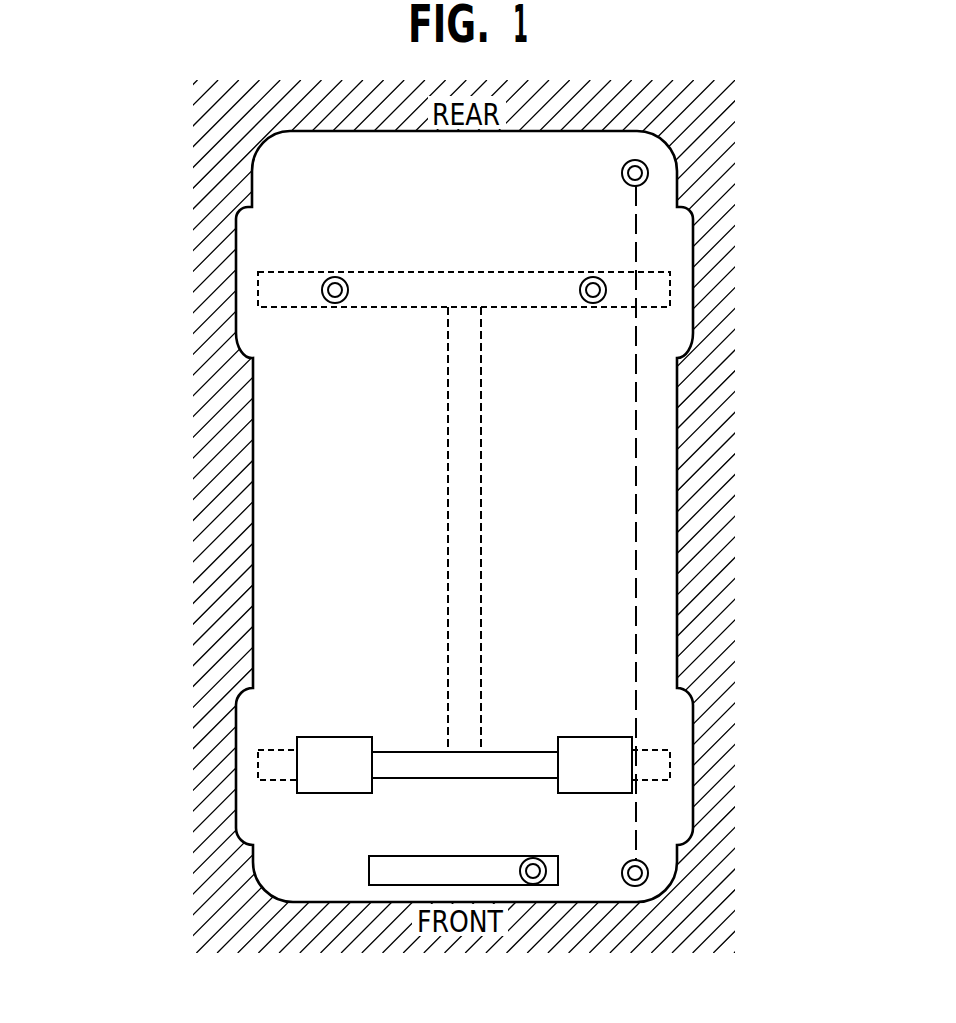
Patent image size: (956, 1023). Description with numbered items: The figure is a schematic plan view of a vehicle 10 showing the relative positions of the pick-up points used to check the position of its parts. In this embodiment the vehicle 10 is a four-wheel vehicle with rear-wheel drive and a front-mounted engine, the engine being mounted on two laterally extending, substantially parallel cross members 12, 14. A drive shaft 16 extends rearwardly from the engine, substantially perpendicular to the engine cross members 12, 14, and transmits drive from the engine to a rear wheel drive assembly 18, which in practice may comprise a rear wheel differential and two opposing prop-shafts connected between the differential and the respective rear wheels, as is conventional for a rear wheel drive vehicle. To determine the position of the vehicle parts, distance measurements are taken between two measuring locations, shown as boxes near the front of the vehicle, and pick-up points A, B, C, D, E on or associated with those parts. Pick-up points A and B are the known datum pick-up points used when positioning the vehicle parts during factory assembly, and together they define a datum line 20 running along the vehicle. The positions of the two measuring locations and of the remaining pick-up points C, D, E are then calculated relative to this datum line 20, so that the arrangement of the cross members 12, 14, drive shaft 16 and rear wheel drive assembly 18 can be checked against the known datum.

The vehicle 10 is at (153, 205).
The cross member 12 is at (258, 766).
The cross member 14 is at (390, 867).
The drive shaft 16 is at (470, 538).
The rear wheel drive assembly 18 is at (262, 292).
The datum line 20 is at (640, 567).
The pick-up point A is at (647, 183).
The pick-up point B is at (647, 880).
The pick-up point C is at (540, 885).
The pick-up point D is at (330, 277).
The pick-up point E is at (594, 277).